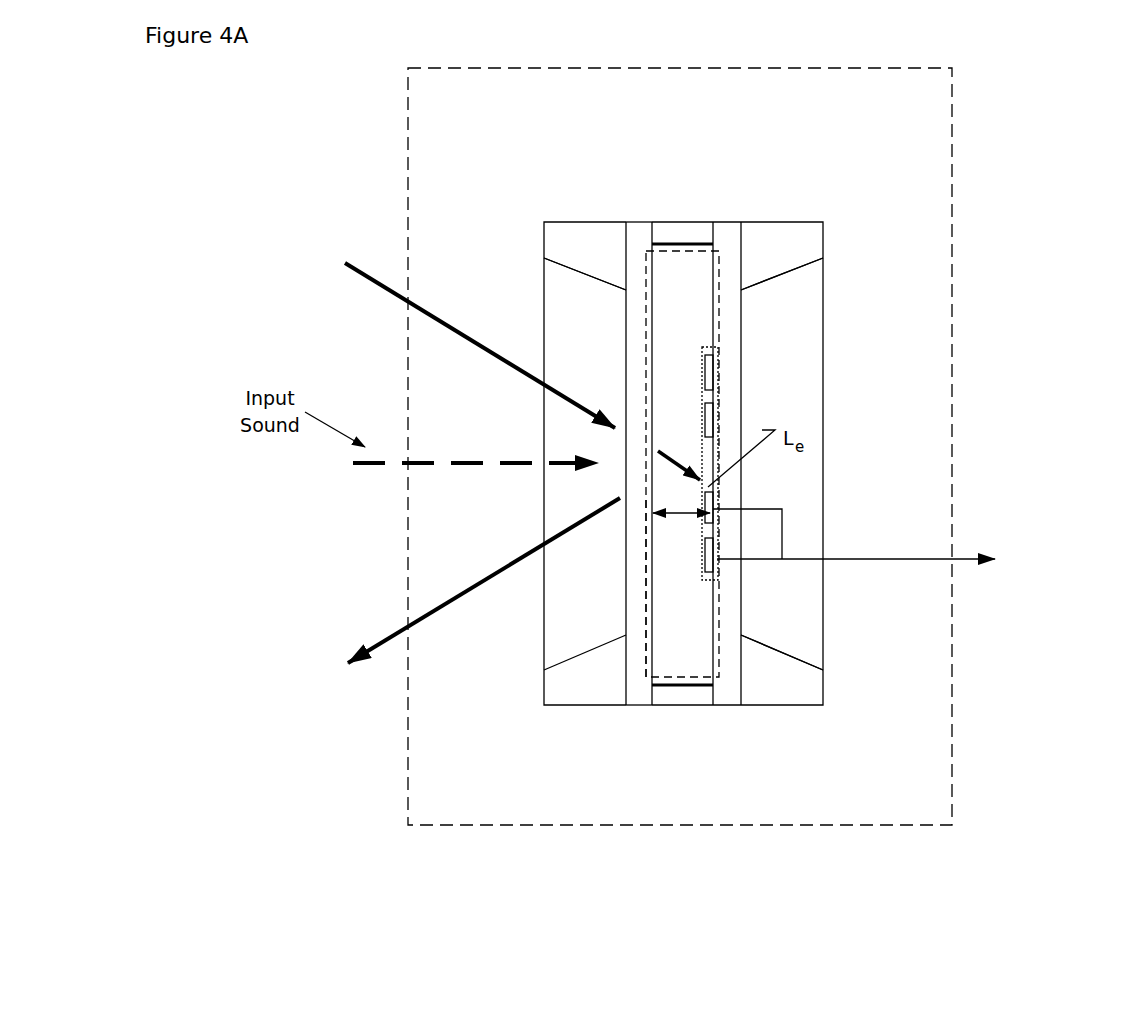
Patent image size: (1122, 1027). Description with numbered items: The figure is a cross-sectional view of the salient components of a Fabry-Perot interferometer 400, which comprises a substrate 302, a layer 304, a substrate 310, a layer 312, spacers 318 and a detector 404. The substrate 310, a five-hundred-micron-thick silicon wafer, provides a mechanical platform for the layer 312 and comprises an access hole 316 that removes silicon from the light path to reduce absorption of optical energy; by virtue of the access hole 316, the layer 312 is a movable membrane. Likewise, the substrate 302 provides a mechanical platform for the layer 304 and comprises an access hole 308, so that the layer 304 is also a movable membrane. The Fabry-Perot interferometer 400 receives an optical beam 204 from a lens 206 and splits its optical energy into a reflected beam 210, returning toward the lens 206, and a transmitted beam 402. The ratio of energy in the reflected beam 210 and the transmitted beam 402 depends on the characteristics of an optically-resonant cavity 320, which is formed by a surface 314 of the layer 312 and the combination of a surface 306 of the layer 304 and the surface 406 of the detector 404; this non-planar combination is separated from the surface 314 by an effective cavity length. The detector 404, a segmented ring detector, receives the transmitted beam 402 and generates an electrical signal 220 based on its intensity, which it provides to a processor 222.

The Fabry-Perot interferometer 400 is at (672, 99).
The substrate 310 is at (583, 257).
The substrate 302 is at (816, 257).
The layer 312 is at (640, 230).
The layer 304 is at (730, 230).
The spacers 318 is at (682, 230).
The access hole 316 is at (567, 305).
The access hole 308 is at (802, 305).
The surface 314 is at (650, 395).
The optically-resonant cavity 320 is at (646, 566).
The surface of detector 406 is at (707, 373).
The detector 404 is at (707, 525).
The transmitted beam 402 is at (692, 468).
The surface 306 is at (715, 635).
The electrical signal 220 is at (863, 559).
The processor 222 is at (1015, 608).
The optical beam 204 is at (380, 288).
The reflected beam 210 is at (378, 640).
The lens 206 is at (322, 449).